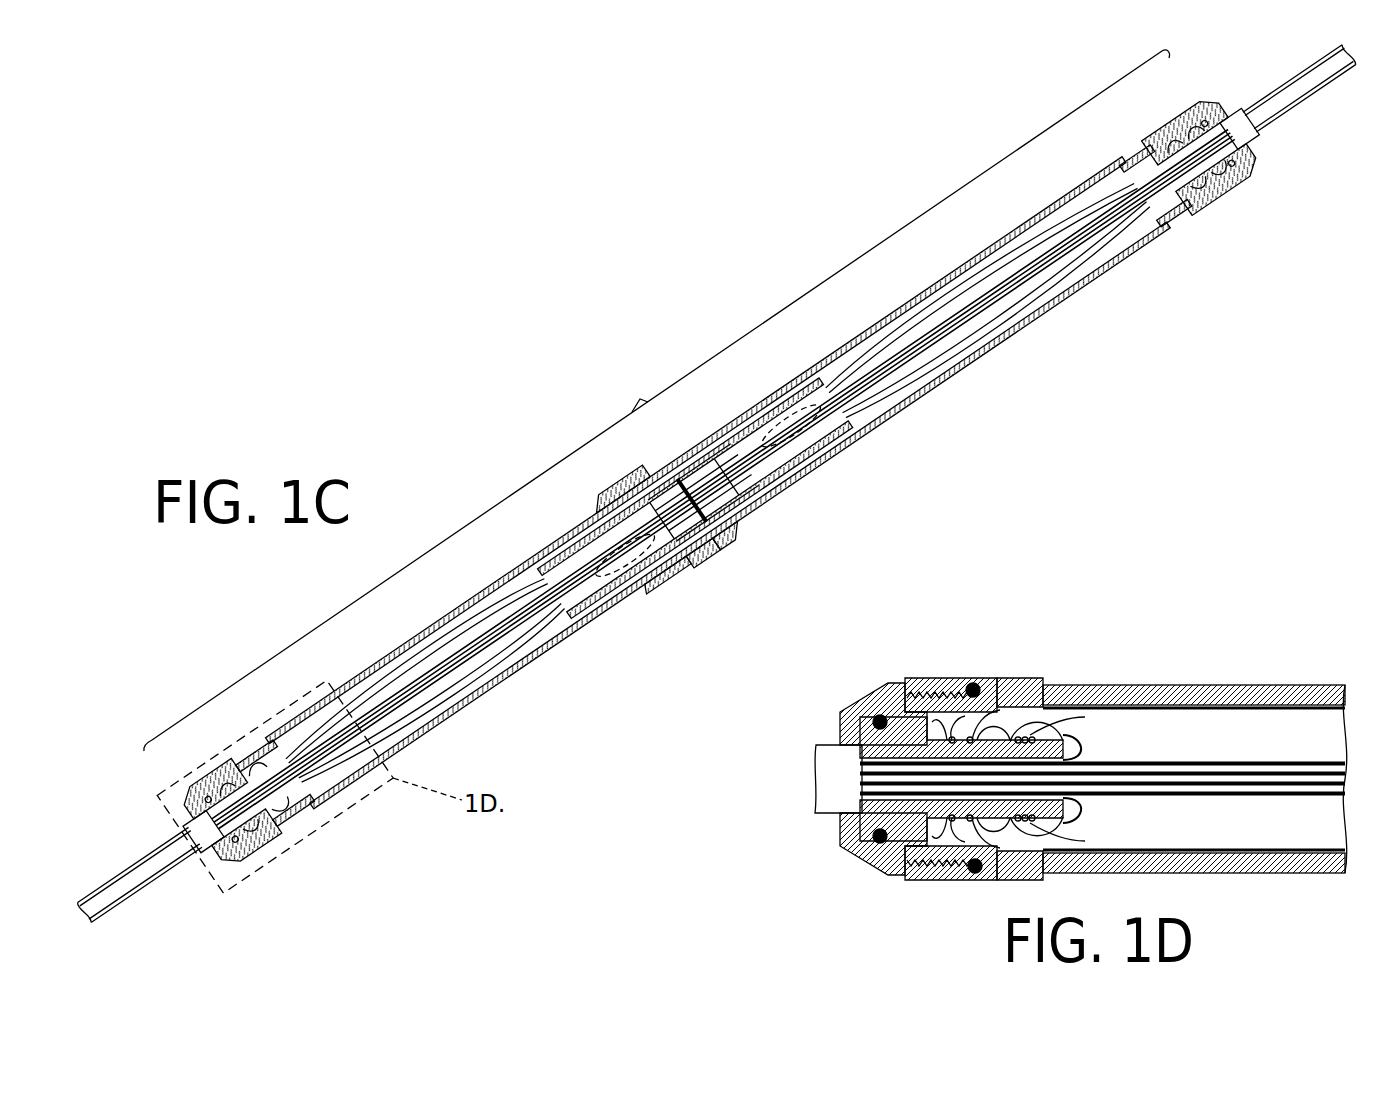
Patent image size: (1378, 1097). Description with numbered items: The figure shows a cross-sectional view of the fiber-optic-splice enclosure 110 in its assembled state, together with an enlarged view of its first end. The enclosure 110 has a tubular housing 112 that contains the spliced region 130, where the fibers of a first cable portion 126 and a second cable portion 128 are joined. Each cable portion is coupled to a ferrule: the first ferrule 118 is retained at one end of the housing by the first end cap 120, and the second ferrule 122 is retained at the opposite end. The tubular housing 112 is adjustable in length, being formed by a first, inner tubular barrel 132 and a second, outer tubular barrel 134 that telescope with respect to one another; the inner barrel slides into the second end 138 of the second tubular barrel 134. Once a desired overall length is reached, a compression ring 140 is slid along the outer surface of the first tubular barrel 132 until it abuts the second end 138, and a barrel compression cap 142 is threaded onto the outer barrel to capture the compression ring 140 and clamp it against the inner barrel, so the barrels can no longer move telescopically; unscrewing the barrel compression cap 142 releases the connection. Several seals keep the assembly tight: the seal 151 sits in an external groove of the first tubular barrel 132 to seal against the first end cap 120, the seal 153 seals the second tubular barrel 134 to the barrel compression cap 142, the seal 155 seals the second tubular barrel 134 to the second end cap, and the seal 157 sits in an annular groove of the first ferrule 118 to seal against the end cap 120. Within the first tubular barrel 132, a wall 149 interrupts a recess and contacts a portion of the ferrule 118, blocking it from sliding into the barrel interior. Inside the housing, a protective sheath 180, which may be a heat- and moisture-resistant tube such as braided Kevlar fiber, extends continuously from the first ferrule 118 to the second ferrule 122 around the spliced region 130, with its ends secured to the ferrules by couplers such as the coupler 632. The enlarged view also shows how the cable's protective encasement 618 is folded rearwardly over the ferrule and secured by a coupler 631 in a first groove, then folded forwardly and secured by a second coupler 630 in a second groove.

In FIG. 1C, the fiber-optic-splice enclosure 110 is at (433, 281).
In FIG. 1C, the tubular housing 112 is at (657, 400).
In FIG. 1C, the first ferrule 118 is at (186, 818).
In FIG. 1D, the first ferrule 118 is at (830, 816).
In FIG. 1D, the first end cap 120 is at (870, 700).
In FIG. 1C, the second ferrule 122 is at (1222, 118).
In FIG. 1C, the cable portion 126 is at (201, 832).
In FIG. 1C, the cable portion 128 is at (1231, 128).
In FIG. 1C, the spliced region 130 is at (831, 434).
In FIG. 1D, the first tubular barrel 132 is at (1212, 684).
In FIG. 1C, the second tubular barrel 134 is at (1031, 314).
In FIG. 1C, the second end of the second tubular barrel 138 is at (691, 558).
In FIG. 1C, the compression ring 140 is at (671, 577).
In FIG. 1C, the barrel compression cap 142 is at (640, 490).
In FIG. 1D, the wall 149 is at (922, 678).
In FIG. 1D, the O-ring or other seal 151 is at (974, 872).
In FIG. 1C, the O-ring or other seal 153 is at (712, 550).
In FIG. 1C, the O-ring or other seal 155 is at (1213, 188).
In FIG. 1D, the O-ring or other seal 157 is at (878, 842).
In FIG. 1D, the protective sheath 180 is at (1236, 709).
In FIG. 1D, the protective encasement 618 is at (1086, 722).
In FIG. 1D, the second coupler 630 is at (1046, 718).
In FIG. 1D, the coupler 631 is at (988, 712).
In FIG. 1D, the coupler 632 is at (957, 690).